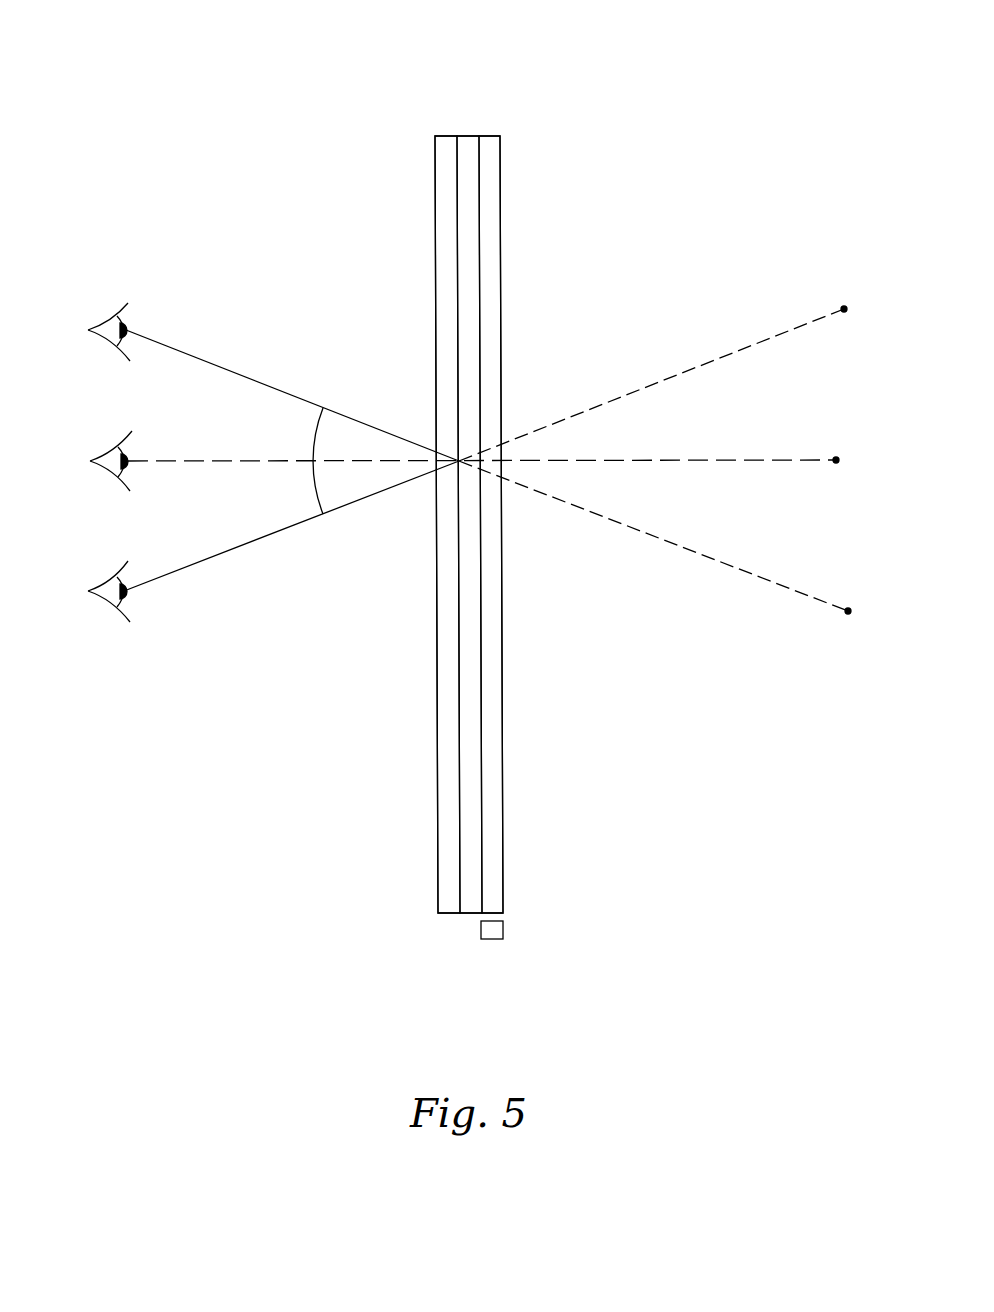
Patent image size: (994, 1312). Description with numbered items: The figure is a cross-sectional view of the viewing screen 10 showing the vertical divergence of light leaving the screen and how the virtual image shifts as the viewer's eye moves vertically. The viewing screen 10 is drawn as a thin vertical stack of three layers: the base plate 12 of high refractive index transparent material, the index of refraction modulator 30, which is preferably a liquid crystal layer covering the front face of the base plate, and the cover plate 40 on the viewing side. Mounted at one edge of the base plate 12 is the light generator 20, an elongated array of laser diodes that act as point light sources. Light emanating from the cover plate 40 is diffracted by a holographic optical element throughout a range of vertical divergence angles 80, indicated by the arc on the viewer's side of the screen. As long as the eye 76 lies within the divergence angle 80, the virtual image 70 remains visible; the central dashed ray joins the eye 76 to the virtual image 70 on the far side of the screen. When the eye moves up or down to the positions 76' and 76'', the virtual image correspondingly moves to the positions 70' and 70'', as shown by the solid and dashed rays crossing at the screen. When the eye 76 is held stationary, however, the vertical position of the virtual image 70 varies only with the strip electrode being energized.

The viewing screen 10 is at (577, 83).
The base plate 12 is at (491, 137).
The light generator 20 is at (490, 940).
The index of refraction modulator 30 is at (467, 138).
The cover plate 40 is at (444, 138).
The virtual image 70 is at (817, 496).
The virtual image position 70' is at (848, 277).
The virtual image position 70'' is at (829, 646).
The eye 76 is at (89, 478).
The eye position 76' is at (111, 620).
The eye position 76'' is at (101, 313).
The vertical divergence angle 80 is at (311, 461).